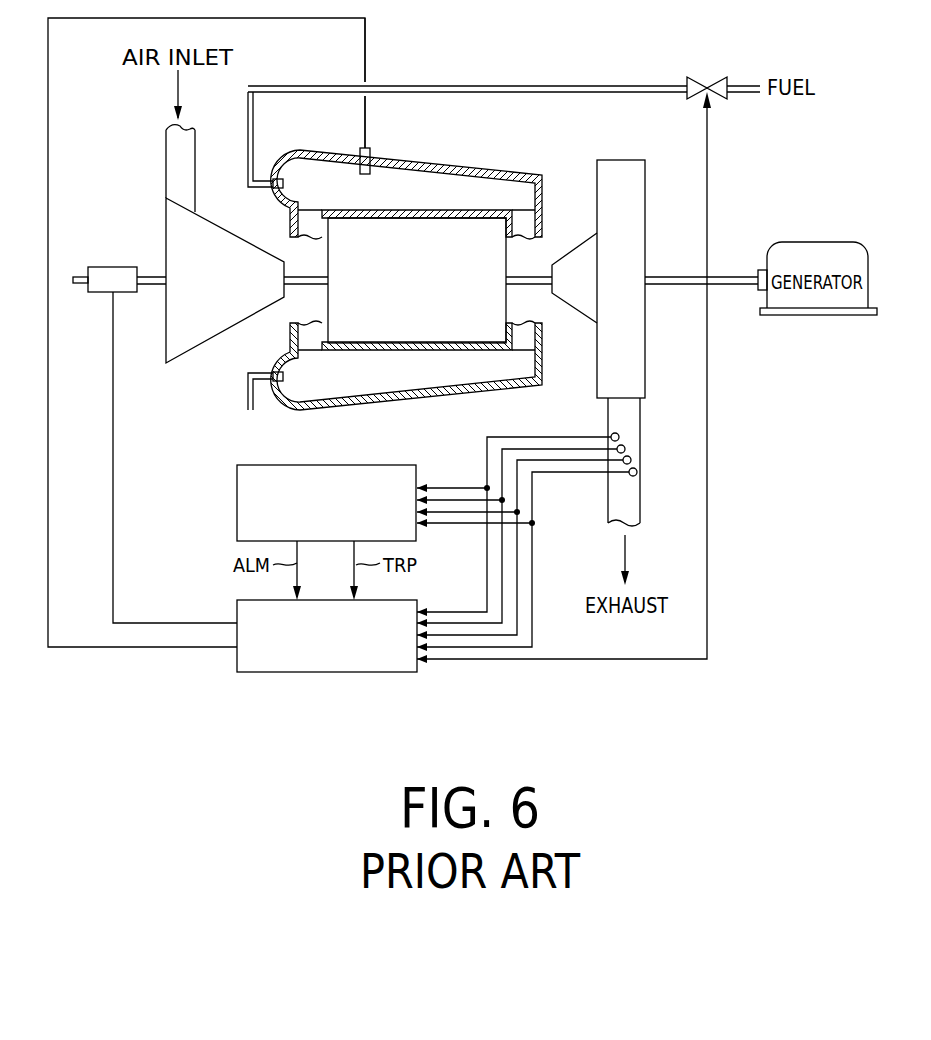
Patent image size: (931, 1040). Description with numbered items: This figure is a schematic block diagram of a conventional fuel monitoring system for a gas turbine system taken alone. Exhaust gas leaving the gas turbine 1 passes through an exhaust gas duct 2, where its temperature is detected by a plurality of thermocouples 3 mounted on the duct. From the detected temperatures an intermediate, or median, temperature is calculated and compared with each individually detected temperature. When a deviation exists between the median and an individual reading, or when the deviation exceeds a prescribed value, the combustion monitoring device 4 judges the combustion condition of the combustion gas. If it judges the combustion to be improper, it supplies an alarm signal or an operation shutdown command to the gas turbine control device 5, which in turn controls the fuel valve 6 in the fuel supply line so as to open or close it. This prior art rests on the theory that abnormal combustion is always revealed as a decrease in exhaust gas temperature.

The gas turbine 1 is at (620, 160).
The exhaust gas duct 2 is at (640, 418).
The thermocouples 3 is at (619, 437).
The combustion monitoring device 4 is at (325, 465).
The gas turbine control device 5 is at (325, 672).
The fuel valve 6 is at (707, 78).